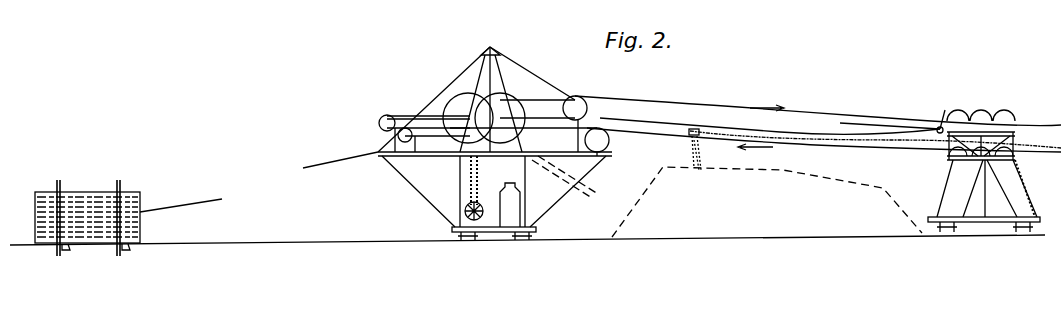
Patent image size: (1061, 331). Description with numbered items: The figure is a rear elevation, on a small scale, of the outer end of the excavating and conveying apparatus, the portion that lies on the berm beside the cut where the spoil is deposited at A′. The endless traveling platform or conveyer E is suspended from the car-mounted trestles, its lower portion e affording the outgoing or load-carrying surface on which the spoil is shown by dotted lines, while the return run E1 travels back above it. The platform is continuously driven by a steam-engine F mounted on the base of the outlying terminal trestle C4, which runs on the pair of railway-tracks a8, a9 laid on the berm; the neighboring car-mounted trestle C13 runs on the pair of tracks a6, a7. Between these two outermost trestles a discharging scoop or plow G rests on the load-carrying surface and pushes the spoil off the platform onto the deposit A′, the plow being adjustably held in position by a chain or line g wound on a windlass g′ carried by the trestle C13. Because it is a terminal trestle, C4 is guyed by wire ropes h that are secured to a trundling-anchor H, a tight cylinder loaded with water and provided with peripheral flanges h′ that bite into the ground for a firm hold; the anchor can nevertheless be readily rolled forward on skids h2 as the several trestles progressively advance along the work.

The trundling-anchor H is at (128, 209).
The peripheral flanges h′ is at (84, 209).
The skids h2 is at (102, 257).
The wire ropes h is at (340, 155).
The car-mounted trestle C4 is at (476, 92).
The steam-engine F is at (510, 196).
The railway-track a9 is at (494, 244).
The railway-track a8 is at (522, 247).
The discharging scoop or plow G is at (686, 143).
The lower portion of the endless platform e is at (875, 145).
The endless traveling platform or conveyer E is at (818, 115).
The lower conveyor belt E1 is at (824, 146).
The spoil deposit A′ is at (767, 202).
The windlass g′ is at (937, 114).
The chain or line g is at (890, 125).
The car-mounted trestle C13 is at (981, 126).
The railway-track a7 is at (984, 239).
The railway-track a6 is at (1023, 242).